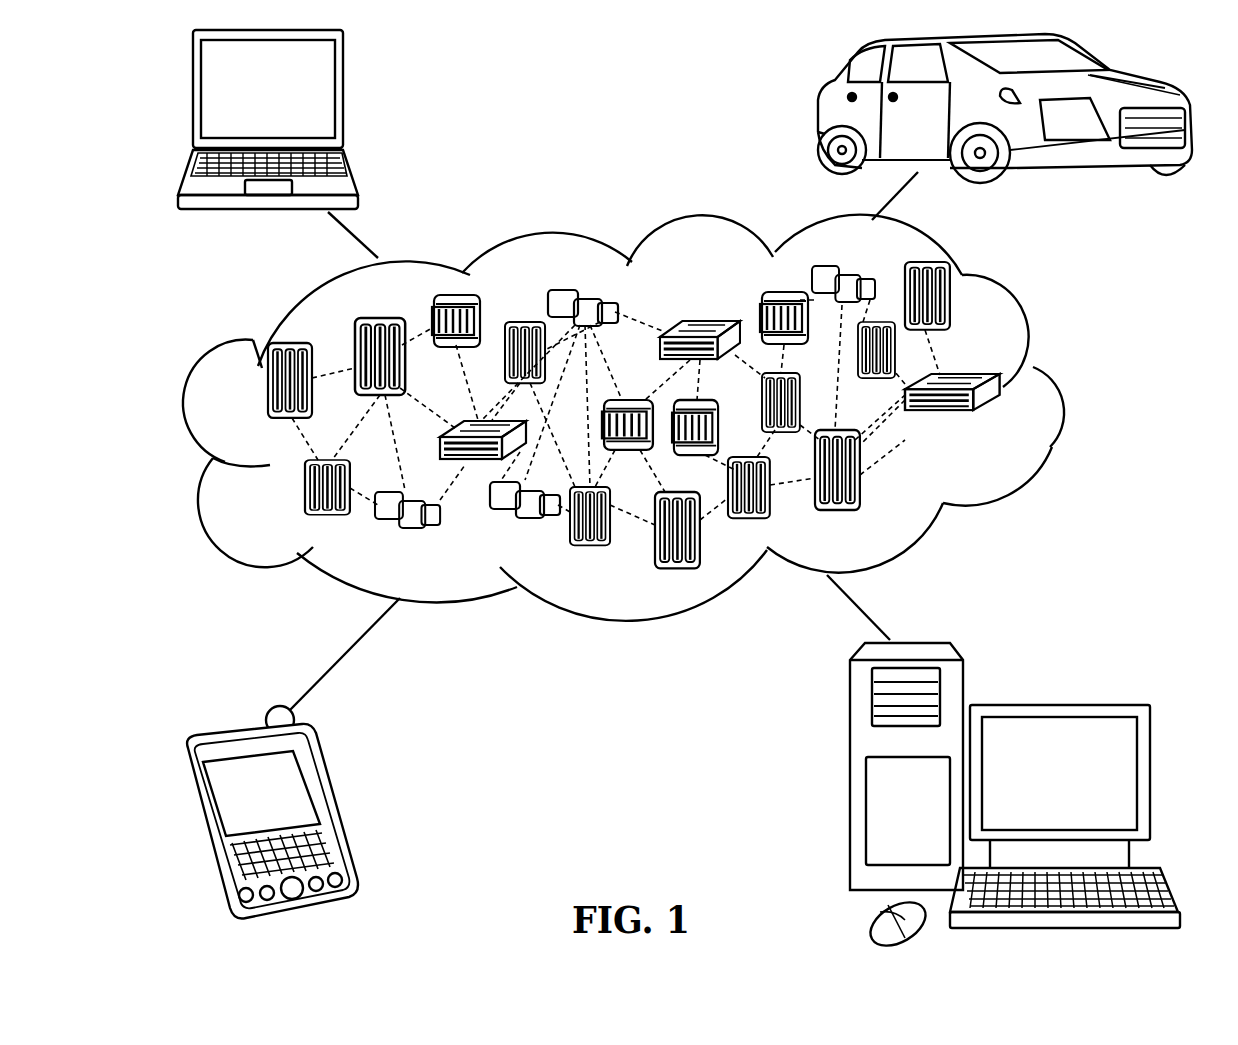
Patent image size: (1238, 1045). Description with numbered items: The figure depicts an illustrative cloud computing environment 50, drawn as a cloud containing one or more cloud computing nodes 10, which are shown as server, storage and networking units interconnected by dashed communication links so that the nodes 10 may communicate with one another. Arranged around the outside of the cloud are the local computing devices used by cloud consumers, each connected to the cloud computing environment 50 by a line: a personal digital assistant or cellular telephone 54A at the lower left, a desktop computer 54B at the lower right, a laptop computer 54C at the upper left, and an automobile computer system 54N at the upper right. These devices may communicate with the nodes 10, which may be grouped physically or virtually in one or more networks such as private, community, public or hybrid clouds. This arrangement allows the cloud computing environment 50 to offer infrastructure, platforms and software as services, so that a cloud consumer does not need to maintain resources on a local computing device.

The cloud computing nodes 10 is at (1000, 425).
The cloud computing environment 50 is at (1062, 394).
The personal digital assistant (PDA) or cellular telephone 54A is at (330, 808).
The desktop computer 54B is at (1057, 703).
The laptop computer 54C is at (347, 98).
The automobile computer system 54N is at (820, 120).